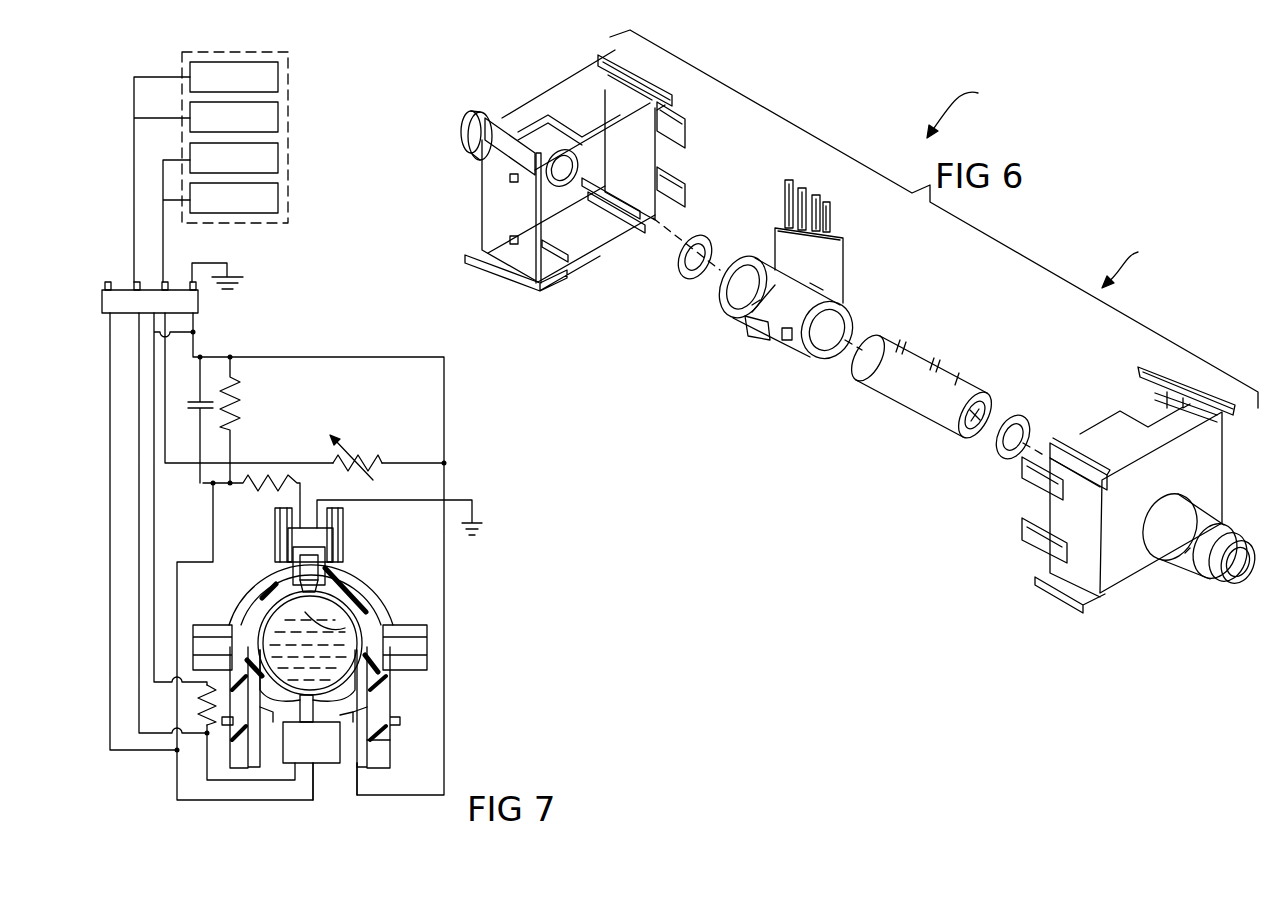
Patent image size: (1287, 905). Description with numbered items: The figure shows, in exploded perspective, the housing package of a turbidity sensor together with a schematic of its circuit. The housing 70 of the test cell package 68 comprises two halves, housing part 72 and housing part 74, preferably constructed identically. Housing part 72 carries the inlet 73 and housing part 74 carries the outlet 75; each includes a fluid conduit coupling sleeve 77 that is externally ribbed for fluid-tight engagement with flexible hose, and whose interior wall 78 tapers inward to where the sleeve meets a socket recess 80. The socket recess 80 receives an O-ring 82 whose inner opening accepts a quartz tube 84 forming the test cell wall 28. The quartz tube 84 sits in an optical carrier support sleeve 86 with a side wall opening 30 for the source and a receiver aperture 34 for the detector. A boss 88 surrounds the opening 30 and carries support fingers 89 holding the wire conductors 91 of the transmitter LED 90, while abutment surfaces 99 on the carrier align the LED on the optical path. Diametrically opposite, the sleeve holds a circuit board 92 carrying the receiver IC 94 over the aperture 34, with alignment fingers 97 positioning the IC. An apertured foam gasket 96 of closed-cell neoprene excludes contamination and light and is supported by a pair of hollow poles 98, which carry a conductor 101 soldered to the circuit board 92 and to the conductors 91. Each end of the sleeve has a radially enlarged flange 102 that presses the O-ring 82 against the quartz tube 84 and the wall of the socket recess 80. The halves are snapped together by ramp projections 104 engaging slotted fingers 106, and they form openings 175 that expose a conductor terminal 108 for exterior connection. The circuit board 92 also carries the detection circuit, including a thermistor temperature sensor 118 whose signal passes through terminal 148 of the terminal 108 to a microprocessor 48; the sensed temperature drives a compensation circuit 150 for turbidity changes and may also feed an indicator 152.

In FIG. 7, the test cell wall 28 is at (363, 633).
In FIG. 6, the test cell wall 28 is at (900, 390).
In FIG. 7, the side wall opening 30 is at (357, 630).
In FIG. 7, the receiver aperture 34 is at (317, 718).
In FIG. 7, the microprocessor 48 is at (182, 62).
In FIG. 6, the test cell package 68 is at (967, 109).
In FIG. 6, the housing 70 is at (1135, 263).
In FIG. 6, the housing part 72 is at (533, 93).
In FIG. 6, the inlet 73 is at (559, 196).
In FIG. 6, the housing part 74 is at (1222, 437).
In FIG. 6, the outlet 75 is at (1237, 572).
In FIG. 6, the fluid conduit coupling sleeve 77 is at (472, 130).
In FIG. 6, the interior wall 78 is at (1243, 557).
In FIG. 6, the socket recess 80 is at (657, 110).
In FIG. 6, the O-ring 82 is at (678, 263).
In FIG. 6, the quartz tube 84 is at (927, 422).
In FIG. 6, the optical carrier support sleeve 86 is at (789, 351).
In FIG. 7, the boss 88 is at (337, 565).
In FIG. 6, the support fingers 89 is at (755, 338).
In FIG. 7, the transmitter LED 90 is at (295, 580).
In FIG. 6, the wire conductors 91 is at (727, 300).
In FIG. 6, the circuit board 92 is at (845, 238).
In FIG. 7, the receiver IC 94 is at (343, 800).
In FIG. 7, the apertured foam gasket 96 is at (340, 723).
In FIG. 6, the apertured foam gasket 96 is at (823, 288).
In FIG. 7, the alignment fingers 97 is at (348, 785).
In FIG. 7, the hollow poles 98 is at (387, 745).
In FIG. 6, the hollow poles 98 is at (837, 308).
In FIG. 7, the abutment surfaces 99 is at (337, 557).
In FIG. 6, the conductor 101 is at (775, 247).
In FIG. 6, the radially enlarged flange 102 is at (743, 258).
In FIG. 6, the ramp projections 104 is at (513, 240).
In FIG. 6, the slotted fingers 106 is at (685, 183).
In FIG. 7, the conductor terminal 108 is at (198, 303).
In FIG. 6, the conductor terminal 108 is at (770, 227).
In FIG. 7, the temperature sensor 118 is at (375, 455).
In FIG. 7, the terminal 148 is at (165, 283).
In FIG. 7, the compensation circuit 150 is at (288, 203).
In FIG. 7, the indicator 152 is at (288, 157).
In FIG. 6, the openings 175 is at (610, 93).